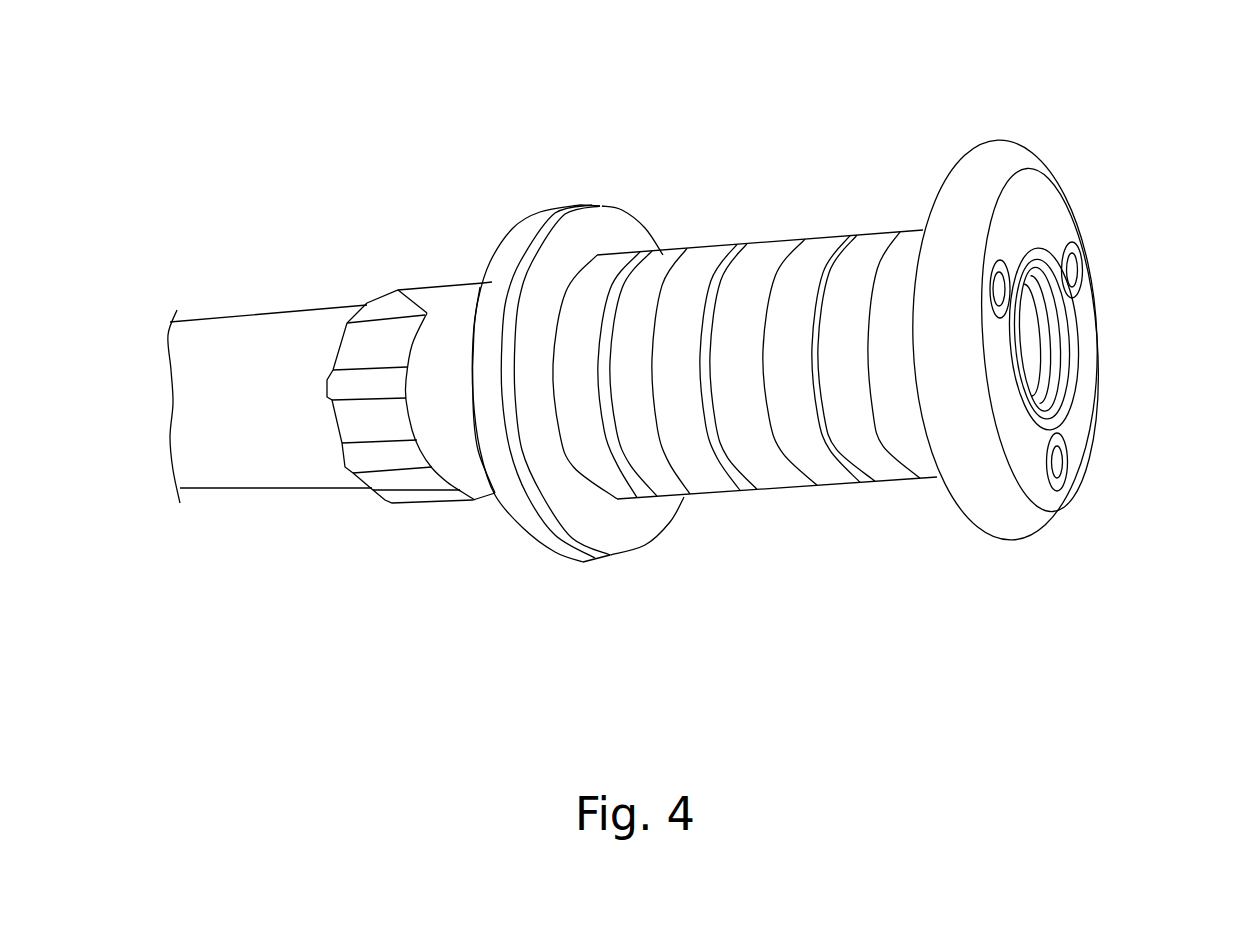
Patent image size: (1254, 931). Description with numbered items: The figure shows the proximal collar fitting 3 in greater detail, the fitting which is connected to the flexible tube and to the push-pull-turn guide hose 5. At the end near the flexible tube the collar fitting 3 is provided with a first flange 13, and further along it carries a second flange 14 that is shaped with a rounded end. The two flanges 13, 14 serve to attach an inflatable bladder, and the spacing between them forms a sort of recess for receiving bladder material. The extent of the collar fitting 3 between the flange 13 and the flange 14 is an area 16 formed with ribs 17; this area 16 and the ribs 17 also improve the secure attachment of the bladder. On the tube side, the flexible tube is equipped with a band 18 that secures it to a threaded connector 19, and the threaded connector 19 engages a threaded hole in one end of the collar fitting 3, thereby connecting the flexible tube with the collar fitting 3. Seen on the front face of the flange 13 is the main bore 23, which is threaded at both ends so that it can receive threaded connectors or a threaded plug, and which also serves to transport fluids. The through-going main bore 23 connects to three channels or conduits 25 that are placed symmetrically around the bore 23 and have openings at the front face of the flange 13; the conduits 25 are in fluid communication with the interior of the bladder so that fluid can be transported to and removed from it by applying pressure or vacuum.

The proximal collar fitting 3 is at (724, 228).
The push-pull-turn guide hose 5 is at (290, 490).
The first flange 13 is at (998, 138).
The second flange 14 is at (568, 205).
The area 16 is at (803, 485).
The ribs 17 is at (733, 488).
The band 18 is at (420, 507).
The threaded connector 19 is at (493, 495).
The main bore 23 is at (1040, 333).
The channels or conduits 25 is at (996, 288).